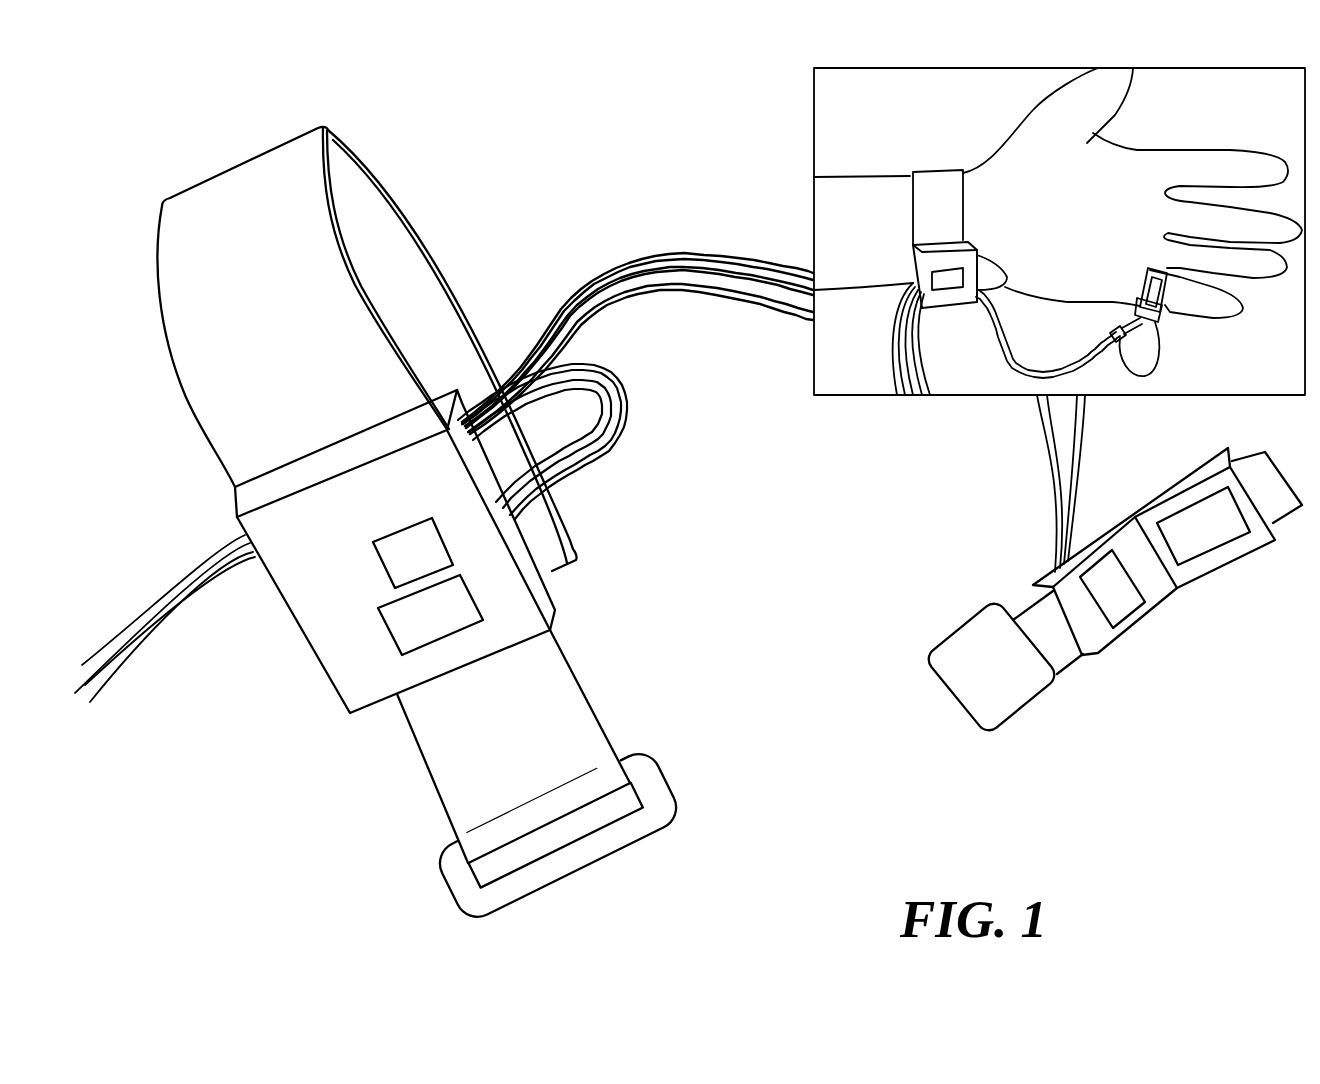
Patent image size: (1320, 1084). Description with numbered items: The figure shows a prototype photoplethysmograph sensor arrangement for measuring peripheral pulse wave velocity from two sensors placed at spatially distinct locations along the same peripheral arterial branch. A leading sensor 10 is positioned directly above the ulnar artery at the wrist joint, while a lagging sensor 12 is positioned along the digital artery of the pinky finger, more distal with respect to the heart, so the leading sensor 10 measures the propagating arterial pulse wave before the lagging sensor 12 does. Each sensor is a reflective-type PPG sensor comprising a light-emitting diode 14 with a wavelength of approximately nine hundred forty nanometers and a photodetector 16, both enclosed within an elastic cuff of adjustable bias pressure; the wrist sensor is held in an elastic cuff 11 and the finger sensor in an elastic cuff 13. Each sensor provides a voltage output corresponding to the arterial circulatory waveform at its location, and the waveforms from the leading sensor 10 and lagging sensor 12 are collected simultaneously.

The leading sensor 10 is at (929, 164).
The elastic cuff 11 is at (174, 403).
The lagging sensor 12 is at (1166, 322).
The elastic cuff 13 is at (1076, 678).
The light-emitting diode 14 is at (393, 562).
The photodetector 16 is at (405, 627).